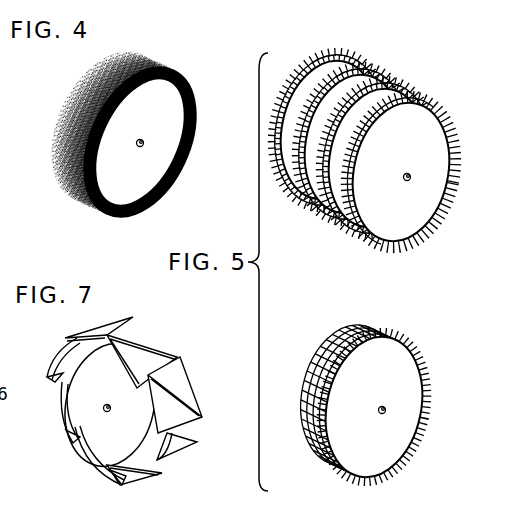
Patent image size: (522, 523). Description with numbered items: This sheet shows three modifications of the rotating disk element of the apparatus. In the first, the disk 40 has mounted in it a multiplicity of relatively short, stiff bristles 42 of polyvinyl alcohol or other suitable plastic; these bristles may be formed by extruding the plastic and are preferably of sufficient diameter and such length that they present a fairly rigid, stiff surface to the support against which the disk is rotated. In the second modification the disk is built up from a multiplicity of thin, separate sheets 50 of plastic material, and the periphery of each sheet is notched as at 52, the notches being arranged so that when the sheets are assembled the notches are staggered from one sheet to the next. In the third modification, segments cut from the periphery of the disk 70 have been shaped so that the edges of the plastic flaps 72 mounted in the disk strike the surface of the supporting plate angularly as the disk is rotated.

In FIG. 4, the disk 40 is at (158, 160).
In FIG. 4, the bristles 42 is at (66, 108).
In FIG. 5, the sheets 50 is at (442, 168).
In FIG. 5, the notches 52 is at (375, 245).
In FIG. 7, the disk 70 is at (93, 430).
In FIG. 7, the plastic flaps 72 is at (167, 357).